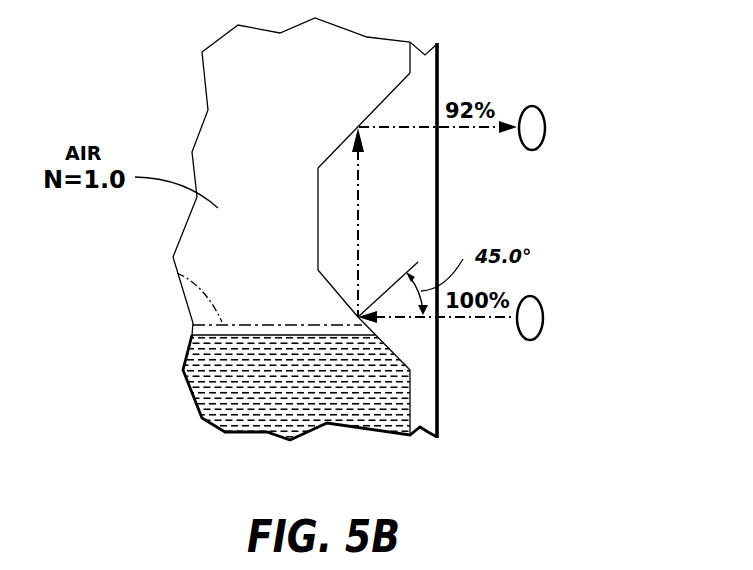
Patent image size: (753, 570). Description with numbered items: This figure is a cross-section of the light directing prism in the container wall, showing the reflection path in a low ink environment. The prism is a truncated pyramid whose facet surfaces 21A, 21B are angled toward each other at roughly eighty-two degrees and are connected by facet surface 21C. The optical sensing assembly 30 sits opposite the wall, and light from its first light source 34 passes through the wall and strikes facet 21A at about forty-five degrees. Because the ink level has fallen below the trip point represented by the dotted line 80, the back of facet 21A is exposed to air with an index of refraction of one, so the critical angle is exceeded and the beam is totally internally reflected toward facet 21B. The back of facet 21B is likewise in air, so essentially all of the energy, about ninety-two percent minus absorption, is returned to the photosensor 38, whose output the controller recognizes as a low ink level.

The facet surface 21A is at (383, 343).
The facet surface 21B is at (390, 97).
The facet surface 21C is at (318, 238).
The optical sensing assembly 30 is at (570, 184).
The first light source 34 is at (544, 318).
The photosensor 38 is at (546, 129).
The dotted line 80 is at (172, 271).